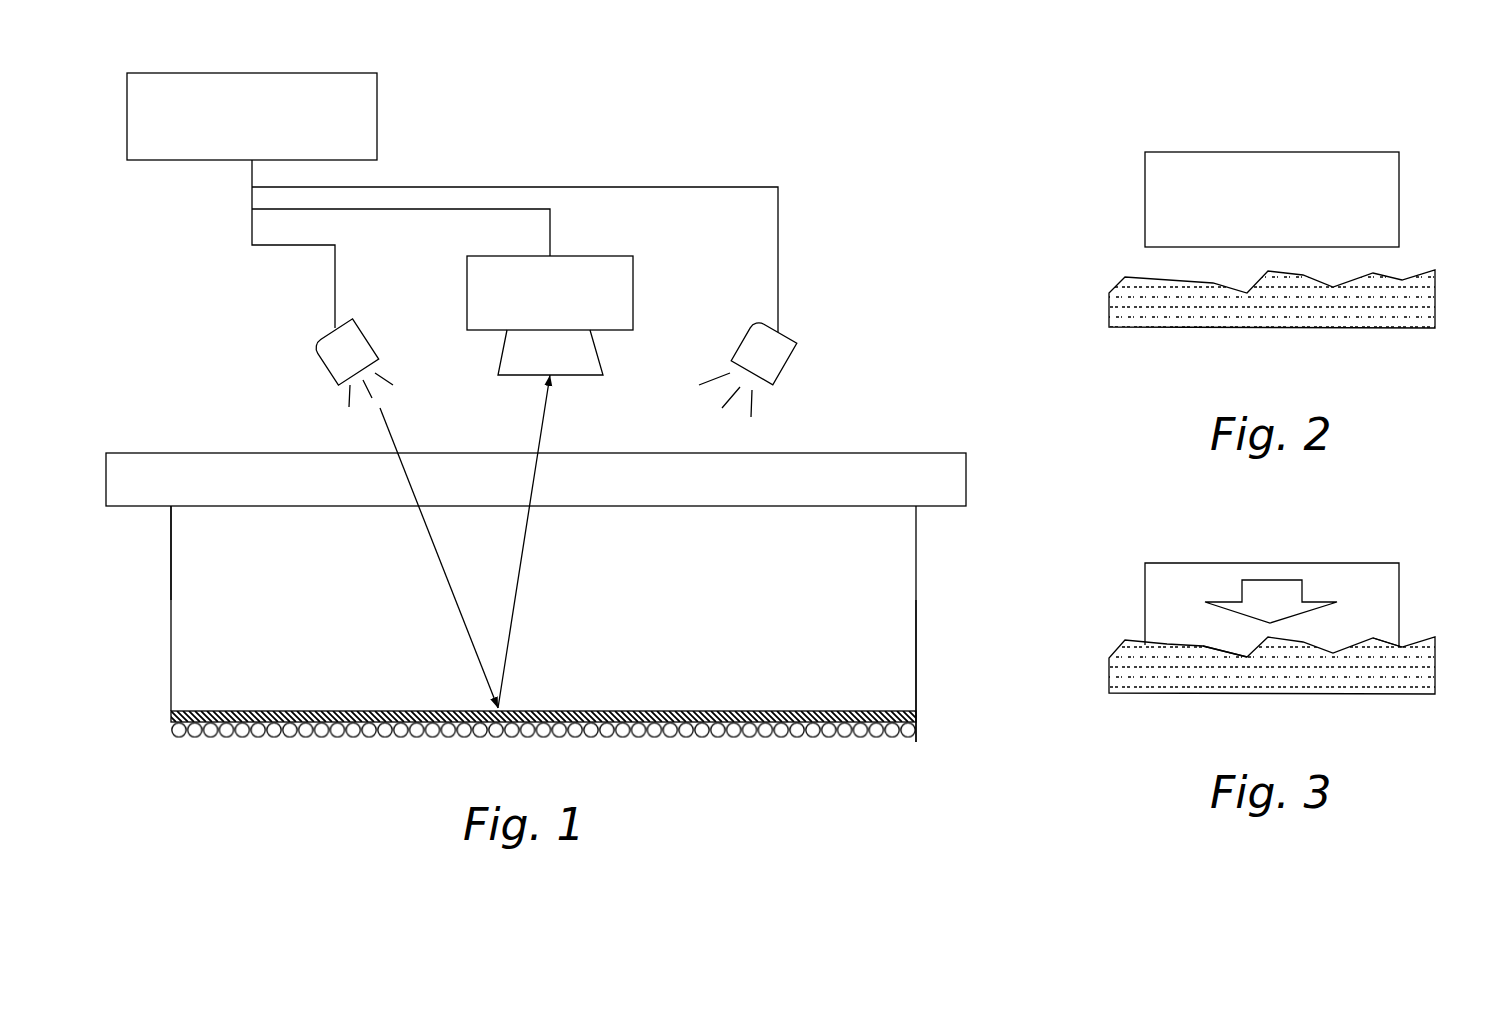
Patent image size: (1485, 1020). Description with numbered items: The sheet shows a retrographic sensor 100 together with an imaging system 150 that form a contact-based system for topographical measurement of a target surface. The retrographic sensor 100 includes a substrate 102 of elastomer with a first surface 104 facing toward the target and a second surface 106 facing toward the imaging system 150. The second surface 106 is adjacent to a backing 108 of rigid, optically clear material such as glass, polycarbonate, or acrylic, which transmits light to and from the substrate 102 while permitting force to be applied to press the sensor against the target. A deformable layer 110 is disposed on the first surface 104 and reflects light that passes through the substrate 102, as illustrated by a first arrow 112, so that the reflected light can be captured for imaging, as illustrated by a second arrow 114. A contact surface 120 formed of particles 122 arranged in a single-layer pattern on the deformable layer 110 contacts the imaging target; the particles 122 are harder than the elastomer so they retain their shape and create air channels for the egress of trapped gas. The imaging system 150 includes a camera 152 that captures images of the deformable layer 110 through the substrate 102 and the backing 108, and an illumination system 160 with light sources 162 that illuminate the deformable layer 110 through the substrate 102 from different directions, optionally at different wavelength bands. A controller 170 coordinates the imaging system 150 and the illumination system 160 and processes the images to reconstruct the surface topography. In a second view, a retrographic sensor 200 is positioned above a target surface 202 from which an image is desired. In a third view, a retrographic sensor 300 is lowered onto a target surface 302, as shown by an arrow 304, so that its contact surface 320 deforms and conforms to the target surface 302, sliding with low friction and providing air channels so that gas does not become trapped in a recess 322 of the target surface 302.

In FIG. 1, the retrographic sensor 100 is at (205, 400).
In FIG. 1, the substrate 102 is at (349, 613).
In FIG. 1, the first surface 104 is at (752, 712).
In FIG. 1, the second surface 106 is at (737, 507).
In FIG. 1, the backing 108 is at (777, 490).
In FIG. 1, the deformable layer 110 is at (917, 720).
In FIG. 1, the first arrow 112 is at (455, 595).
In FIG. 1, the second arrow 114 is at (517, 598).
In FIG. 1, the contact surface 120 is at (529, 734).
In FIG. 1, the particles 122 is at (627, 737).
In FIG. 1, the imaging system 150 is at (185, 233).
In FIG. 1, the camera 152 is at (532, 307).
In FIG. 1, the illumination system 160 is at (610, 353).
In FIG. 1, the light source 162 is at (376, 343).
In FIG. 1, the controller 170 is at (235, 144).
In FIG. 2, the retrographic sensor 200 is at (1399, 207).
In FIG. 2, the target surface 202 is at (1114, 290).
In FIG. 3, the retrographic sensor 300 is at (1399, 602).
In FIG. 3, the target surface 302 is at (1112, 658).
In FIG. 3, the arrow 304 is at (1254, 612).
In FIG. 3, the contact surface 320 is at (1388, 640).
In FIG. 3, the recess 322 is at (1240, 646).